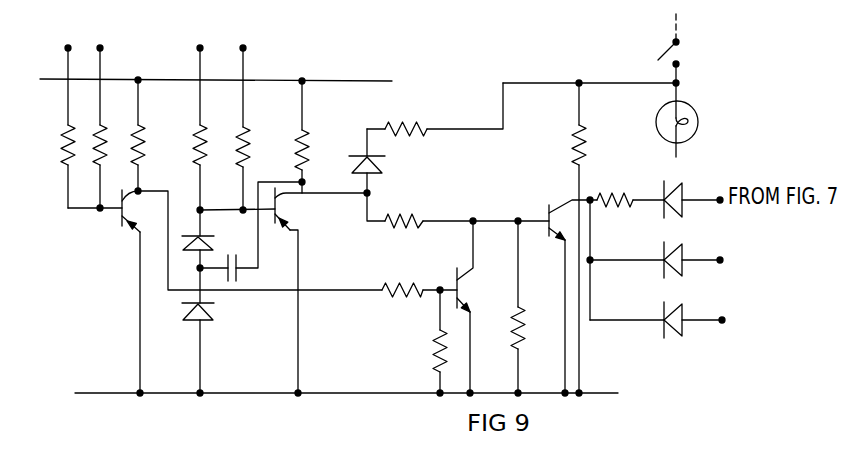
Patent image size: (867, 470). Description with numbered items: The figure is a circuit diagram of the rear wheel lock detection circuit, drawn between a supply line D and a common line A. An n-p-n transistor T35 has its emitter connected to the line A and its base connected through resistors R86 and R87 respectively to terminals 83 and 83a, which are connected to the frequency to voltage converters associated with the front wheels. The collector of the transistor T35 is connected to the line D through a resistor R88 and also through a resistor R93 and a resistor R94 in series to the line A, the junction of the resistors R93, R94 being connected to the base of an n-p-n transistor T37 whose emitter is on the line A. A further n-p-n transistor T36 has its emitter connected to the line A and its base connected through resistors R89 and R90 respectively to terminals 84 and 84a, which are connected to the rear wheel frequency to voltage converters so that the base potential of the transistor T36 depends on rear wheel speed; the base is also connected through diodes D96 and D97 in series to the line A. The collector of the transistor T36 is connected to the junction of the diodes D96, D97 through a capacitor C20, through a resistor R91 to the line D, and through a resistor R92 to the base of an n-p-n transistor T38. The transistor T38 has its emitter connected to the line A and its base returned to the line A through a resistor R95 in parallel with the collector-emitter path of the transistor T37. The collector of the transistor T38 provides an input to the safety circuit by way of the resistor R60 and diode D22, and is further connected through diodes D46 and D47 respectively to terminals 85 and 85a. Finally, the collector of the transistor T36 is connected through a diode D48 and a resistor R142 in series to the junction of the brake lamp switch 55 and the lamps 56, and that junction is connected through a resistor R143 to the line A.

The line D is at (367, 80).
The line A is at (318, 393).
The terminal 83 is at (70, 48).
The terminal 83a is at (100, 48).
The terminal 84 is at (200, 48).
The terminal 84a is at (243, 48).
The resistor R86 is at (58, 143).
The resistor R87 is at (100, 158).
The resistor R88 is at (143, 133).
The resistor R89 is at (197, 133).
The resistor R90 is at (247, 137).
The resistor R91 is at (305, 138).
The n-p-n transistor T35 is at (120, 234).
The n-p-n transistor T36 is at (294, 213).
The n-p-n transistor T37 is at (471, 285).
The n-p-n transistor T38 is at (562, 203).
The diode D96 is at (186, 246).
The diode D97 is at (201, 320).
The capacitor C20 is at (238, 280).
The diode D48 is at (392, 162).
The resistor R142 is at (421, 122).
The resistor R143 is at (572, 133).
The resistor R92 is at (397, 213).
The resistor R93 is at (387, 285).
The resistor R94 is at (438, 333).
The resistor R95 is at (521, 320).
The resistor R60 is at (602, 196).
The diode D22 is at (700, 180).
The diode D46 is at (664, 252).
The diode D47 is at (662, 304).
The terminal 85 is at (719, 258).
The terminal 85a is at (721, 322).
The brake lamp switch 55 is at (668, 44).
The lamps 56 is at (657, 127).